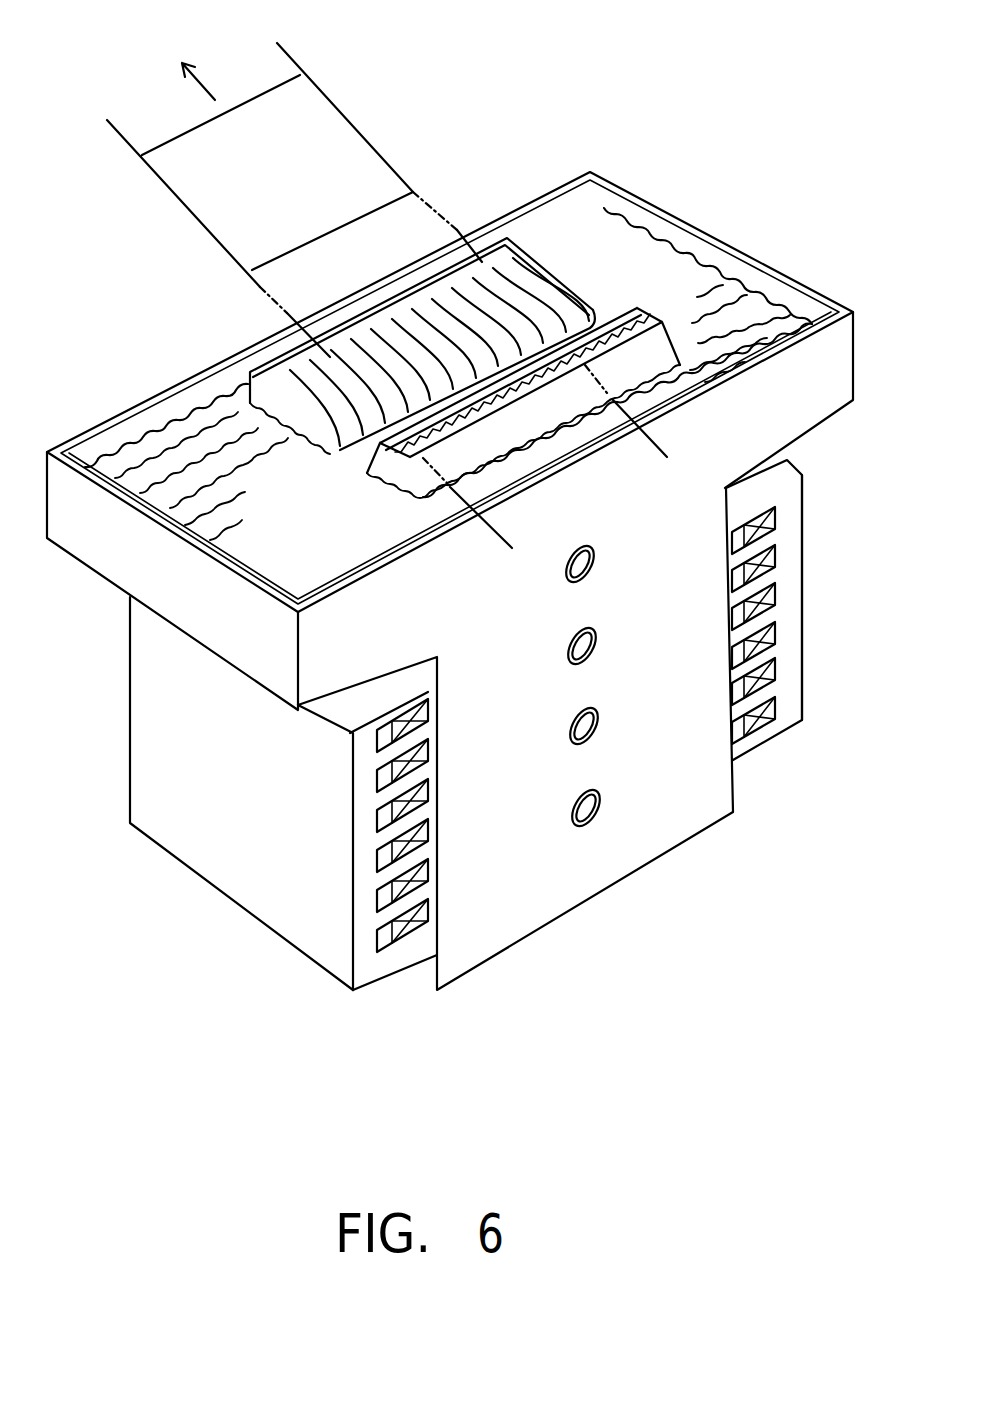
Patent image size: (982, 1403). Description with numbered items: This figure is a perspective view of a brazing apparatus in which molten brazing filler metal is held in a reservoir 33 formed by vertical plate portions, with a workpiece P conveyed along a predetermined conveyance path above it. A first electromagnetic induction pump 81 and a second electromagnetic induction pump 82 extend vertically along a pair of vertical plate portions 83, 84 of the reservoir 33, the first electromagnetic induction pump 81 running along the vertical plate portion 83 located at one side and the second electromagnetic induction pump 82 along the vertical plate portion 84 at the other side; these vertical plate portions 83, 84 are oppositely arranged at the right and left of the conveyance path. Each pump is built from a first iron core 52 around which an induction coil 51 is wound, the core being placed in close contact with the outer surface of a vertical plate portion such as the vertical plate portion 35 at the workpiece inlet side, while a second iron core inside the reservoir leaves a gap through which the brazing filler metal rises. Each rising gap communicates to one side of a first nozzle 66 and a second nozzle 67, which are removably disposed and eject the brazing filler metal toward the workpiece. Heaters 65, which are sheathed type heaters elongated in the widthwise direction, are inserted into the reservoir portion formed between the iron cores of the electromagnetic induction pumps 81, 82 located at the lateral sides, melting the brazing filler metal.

The recording paper P is at (333, 101).
The reservoir 33 is at (823, 293).
The vertical plate portion 35 is at (654, 808).
The induction coil 51 is at (393, 858).
The first iron core 52 is at (362, 908).
The heaters 65 is at (588, 828).
The first nozzle 66 is at (655, 317).
The second nozzle 67 is at (545, 258).
The first electromagnetic induction pump 81 is at (222, 872).
The second electromagnetic induction pump 82 is at (808, 630).
The vertical plate portion 83 is at (426, 966).
The vertical plate portion 84 is at (735, 788).